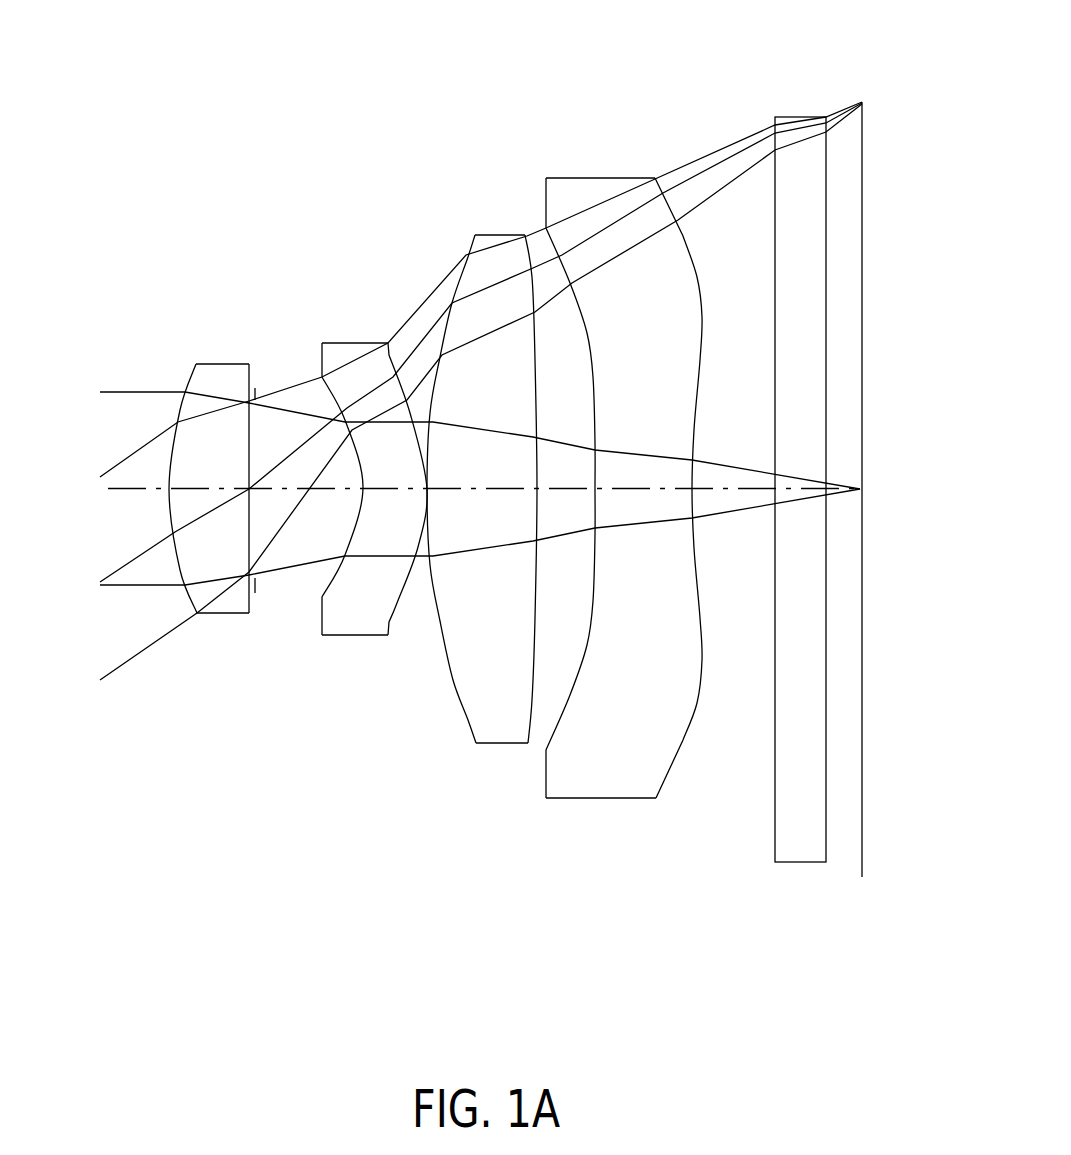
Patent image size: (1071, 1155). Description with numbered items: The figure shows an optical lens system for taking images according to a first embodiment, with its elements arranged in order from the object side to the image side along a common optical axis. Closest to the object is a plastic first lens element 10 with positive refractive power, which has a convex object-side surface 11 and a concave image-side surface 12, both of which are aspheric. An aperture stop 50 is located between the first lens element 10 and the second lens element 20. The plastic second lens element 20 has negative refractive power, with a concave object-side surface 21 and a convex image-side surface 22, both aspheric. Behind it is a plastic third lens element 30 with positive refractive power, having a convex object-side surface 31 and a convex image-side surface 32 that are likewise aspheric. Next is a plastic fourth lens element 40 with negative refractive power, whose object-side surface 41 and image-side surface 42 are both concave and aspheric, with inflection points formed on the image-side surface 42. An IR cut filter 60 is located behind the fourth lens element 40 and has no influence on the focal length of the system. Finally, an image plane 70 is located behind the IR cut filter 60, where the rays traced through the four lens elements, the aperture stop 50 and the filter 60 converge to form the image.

The first lens element 10 is at (179, 520).
The object-side surface of the first lens element 11 is at (178, 553).
The image-side surface of the first lens element 12 is at (250, 547).
The second lens element 20 is at (377, 484).
The object-side surface of the second lens element 21 is at (333, 585).
The image-side surface of the second lens element 22 is at (398, 595).
The third lens element 30 is at (468, 474).
The object-side surface of the third lens element 31 is at (453, 672).
The image-side surface of the third lens element 32 is at (531, 682).
The fourth lens element 40 is at (643, 457).
The object-side surface of the fourth lens element 41 is at (559, 728).
The image-side surface of the fourth lens element 42 is at (685, 740).
The aperture stop 50 is at (255, 387).
The IR cut filter 60 is at (792, 116).
The image plane 70 is at (867, 125).